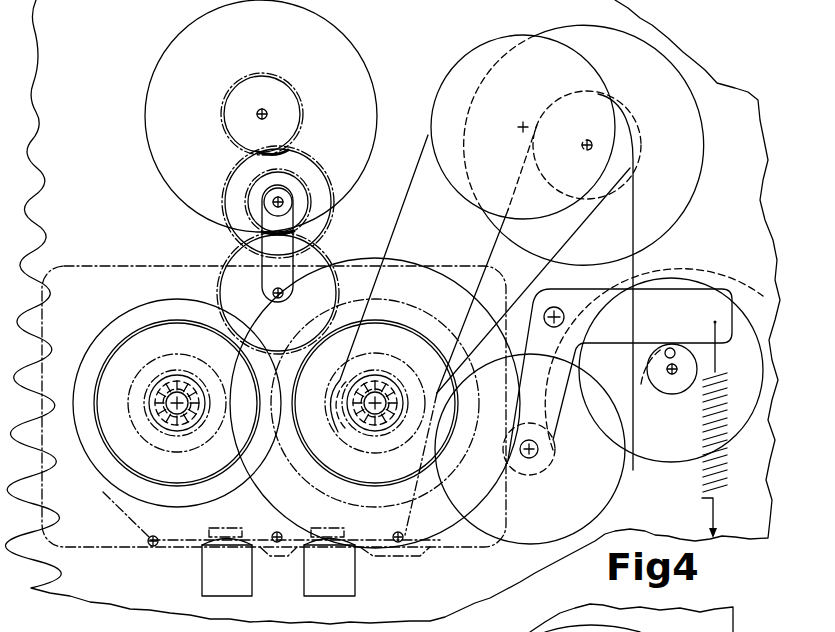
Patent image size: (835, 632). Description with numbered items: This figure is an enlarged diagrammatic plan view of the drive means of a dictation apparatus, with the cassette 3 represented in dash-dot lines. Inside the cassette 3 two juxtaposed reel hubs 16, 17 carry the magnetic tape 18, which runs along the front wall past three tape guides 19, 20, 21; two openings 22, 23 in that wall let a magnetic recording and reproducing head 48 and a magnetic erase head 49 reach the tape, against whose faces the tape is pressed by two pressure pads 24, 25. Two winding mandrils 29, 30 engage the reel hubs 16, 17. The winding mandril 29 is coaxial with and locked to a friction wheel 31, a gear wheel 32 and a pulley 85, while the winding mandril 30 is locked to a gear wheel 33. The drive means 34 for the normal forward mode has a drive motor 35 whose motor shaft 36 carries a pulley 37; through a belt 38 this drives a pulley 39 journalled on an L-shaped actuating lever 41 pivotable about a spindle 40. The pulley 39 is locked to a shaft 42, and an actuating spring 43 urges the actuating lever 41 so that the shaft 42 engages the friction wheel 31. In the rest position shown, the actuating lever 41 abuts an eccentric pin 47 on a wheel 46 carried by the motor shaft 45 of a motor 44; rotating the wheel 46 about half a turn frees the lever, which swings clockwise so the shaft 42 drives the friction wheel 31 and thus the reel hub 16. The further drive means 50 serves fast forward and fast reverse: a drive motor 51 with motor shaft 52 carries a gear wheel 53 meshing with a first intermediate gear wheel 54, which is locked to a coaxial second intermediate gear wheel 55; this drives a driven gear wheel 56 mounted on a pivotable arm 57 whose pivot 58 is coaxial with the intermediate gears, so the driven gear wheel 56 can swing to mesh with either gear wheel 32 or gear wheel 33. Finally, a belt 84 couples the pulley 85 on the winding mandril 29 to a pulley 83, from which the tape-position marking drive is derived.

The cassette 3 is at (98, 260).
The reel hub 16 is at (380, 355).
The reel hub 17 is at (141, 367).
The magnetic tape 18 is at (125, 518).
The tape guide 19 is at (403, 545).
The tape guide 20 is at (279, 544).
The tape guide 21 is at (155, 548).
The opening 22 is at (357, 548).
The opening 23 is at (194, 548).
The pressure pad 24 is at (331, 528).
The pressure pad 25 is at (221, 528).
The winding mandril 29 is at (377, 418).
The winding mandril 30 is at (150, 425).
The friction wheel 31 is at (400, 262).
The gear wheel 32 is at (388, 308).
The gear wheel 33 is at (140, 333).
The drive means 34 is at (672, 240).
The drive motor 35 is at (699, 147).
The motor shaft 36 is at (582, 146).
The pulley 37 is at (625, 122).
The belt 38 is at (636, 213).
The pulley 39 is at (598, 507).
The spindle 40 is at (553, 307).
The actuating lever 41 is at (590, 298).
The shaft 42 is at (538, 449).
The actuating spring 43 is at (720, 499).
The motor 44 is at (680, 459).
The motor shaft 45 is at (678, 376).
The wheel 46 is at (657, 386).
The eccentric pin 47 is at (652, 377).
The magnetic recording and reproducing head 48 is at (350, 588).
The magnetic erase head 49 is at (248, 589).
The drive means 50 is at (138, 62).
The drive motor 51 is at (197, 25).
The motor shaft 52 is at (258, 113).
The gear wheel 53 is at (285, 91).
The first intermediate gear wheel 54 is at (291, 153).
The second intermediate gear wheel 55 is at (304, 189).
The driven gear wheel 56 is at (319, 254).
The pivotable arm 57 is at (262, 263).
The pivot 58 is at (272, 202).
The pulley 83 is at (478, 50).
The belt 84 is at (413, 180).
The pulley 85 is at (345, 428).